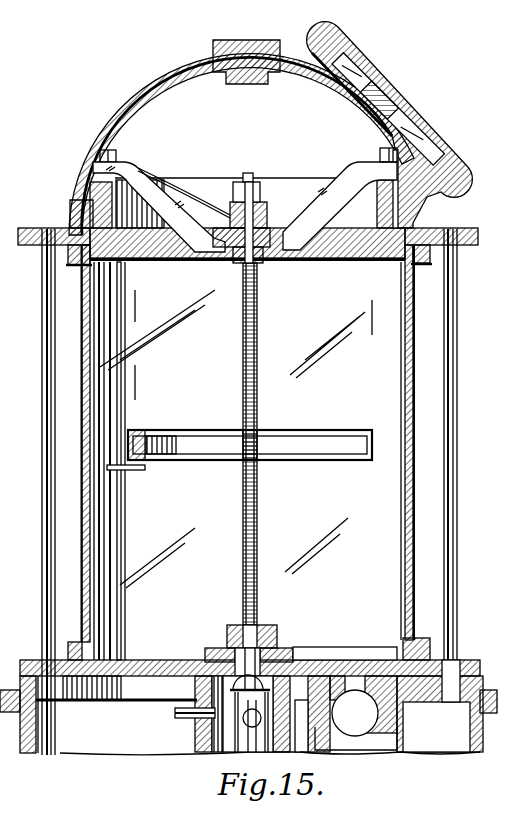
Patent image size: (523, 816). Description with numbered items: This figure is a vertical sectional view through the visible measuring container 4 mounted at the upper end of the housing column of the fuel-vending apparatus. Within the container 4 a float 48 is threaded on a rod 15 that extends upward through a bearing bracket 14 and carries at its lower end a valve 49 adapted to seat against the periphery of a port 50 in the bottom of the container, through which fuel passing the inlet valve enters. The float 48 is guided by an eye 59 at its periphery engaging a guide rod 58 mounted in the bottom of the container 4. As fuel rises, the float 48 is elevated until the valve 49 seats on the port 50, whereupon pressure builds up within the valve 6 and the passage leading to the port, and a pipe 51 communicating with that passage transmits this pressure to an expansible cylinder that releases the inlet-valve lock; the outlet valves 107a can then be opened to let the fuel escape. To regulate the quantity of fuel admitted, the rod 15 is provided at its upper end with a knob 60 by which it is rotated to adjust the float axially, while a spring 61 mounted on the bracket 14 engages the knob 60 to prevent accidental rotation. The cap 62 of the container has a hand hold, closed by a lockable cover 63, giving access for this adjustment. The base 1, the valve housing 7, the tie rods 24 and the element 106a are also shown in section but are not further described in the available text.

The base 1 is at (83, 757).
The measuring container 4 is at (416, 517).
The valve 6 is at (210, 752).
The valve housing 7 is at (378, 755).
The bearing bracket 14 is at (145, 180).
The rod 15 is at (258, 335).
The tie rod 24 is at (0, 97).
The float 48 is at (330, 416).
The valve 49 is at (318, 633).
The port 50 is at (224, 648).
The pipe 51 is at (183, 722).
The guide rod 58 is at (121, 386).
The eye 59 is at (134, 472).
The knob 60 is at (262, 203).
The spring 61 is at (200, 208).
The cap 62 is at (152, 84).
The cover 63 is at (366, 70).
The valve seat 106a is at (366, 662).
The outlet valves 107a is at (355, 713).